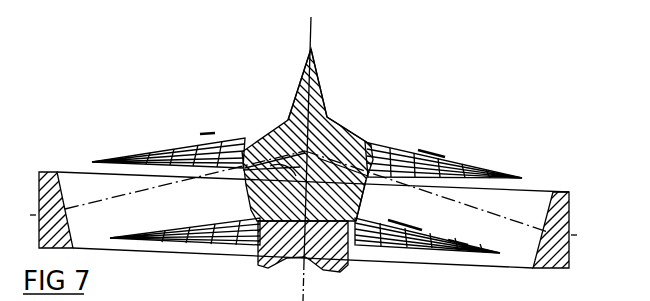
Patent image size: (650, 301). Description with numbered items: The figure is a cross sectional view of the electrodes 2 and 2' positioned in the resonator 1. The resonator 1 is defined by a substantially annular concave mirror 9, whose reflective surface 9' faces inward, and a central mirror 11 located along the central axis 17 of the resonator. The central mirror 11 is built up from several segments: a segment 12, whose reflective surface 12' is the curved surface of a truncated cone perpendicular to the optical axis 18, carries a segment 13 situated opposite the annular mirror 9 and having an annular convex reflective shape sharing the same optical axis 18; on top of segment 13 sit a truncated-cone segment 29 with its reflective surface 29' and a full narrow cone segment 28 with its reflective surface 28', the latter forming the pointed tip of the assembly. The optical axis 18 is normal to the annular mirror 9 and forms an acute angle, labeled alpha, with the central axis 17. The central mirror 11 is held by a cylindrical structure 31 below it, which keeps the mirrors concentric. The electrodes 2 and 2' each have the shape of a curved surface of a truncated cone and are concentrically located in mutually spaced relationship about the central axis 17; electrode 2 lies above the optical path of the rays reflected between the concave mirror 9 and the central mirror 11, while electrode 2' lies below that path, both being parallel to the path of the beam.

The resonator 1 is at (503, 164).
The electrode 2 is at (443, 144).
The electrode 2' is at (427, 233).
The annular concave mirror 9 is at (325, 150).
The reflective surface 9' is at (325, 150).
The central mirror 11 is at (288, 129).
The segment 12 is at (185, 218).
The reflective surface 12' is at (386, 200).
The segment 13 is at (243, 173).
The central axis 17 is at (313, 77).
The optical axis 18 is at (145, 195).
The segment 28 is at (279, 92).
The reflective surface 28' is at (288, 49).
The segment 29 is at (364, 127).
The reflective surface 29' is at (343, 85).
The cylindrical structure 31 is at (274, 257).